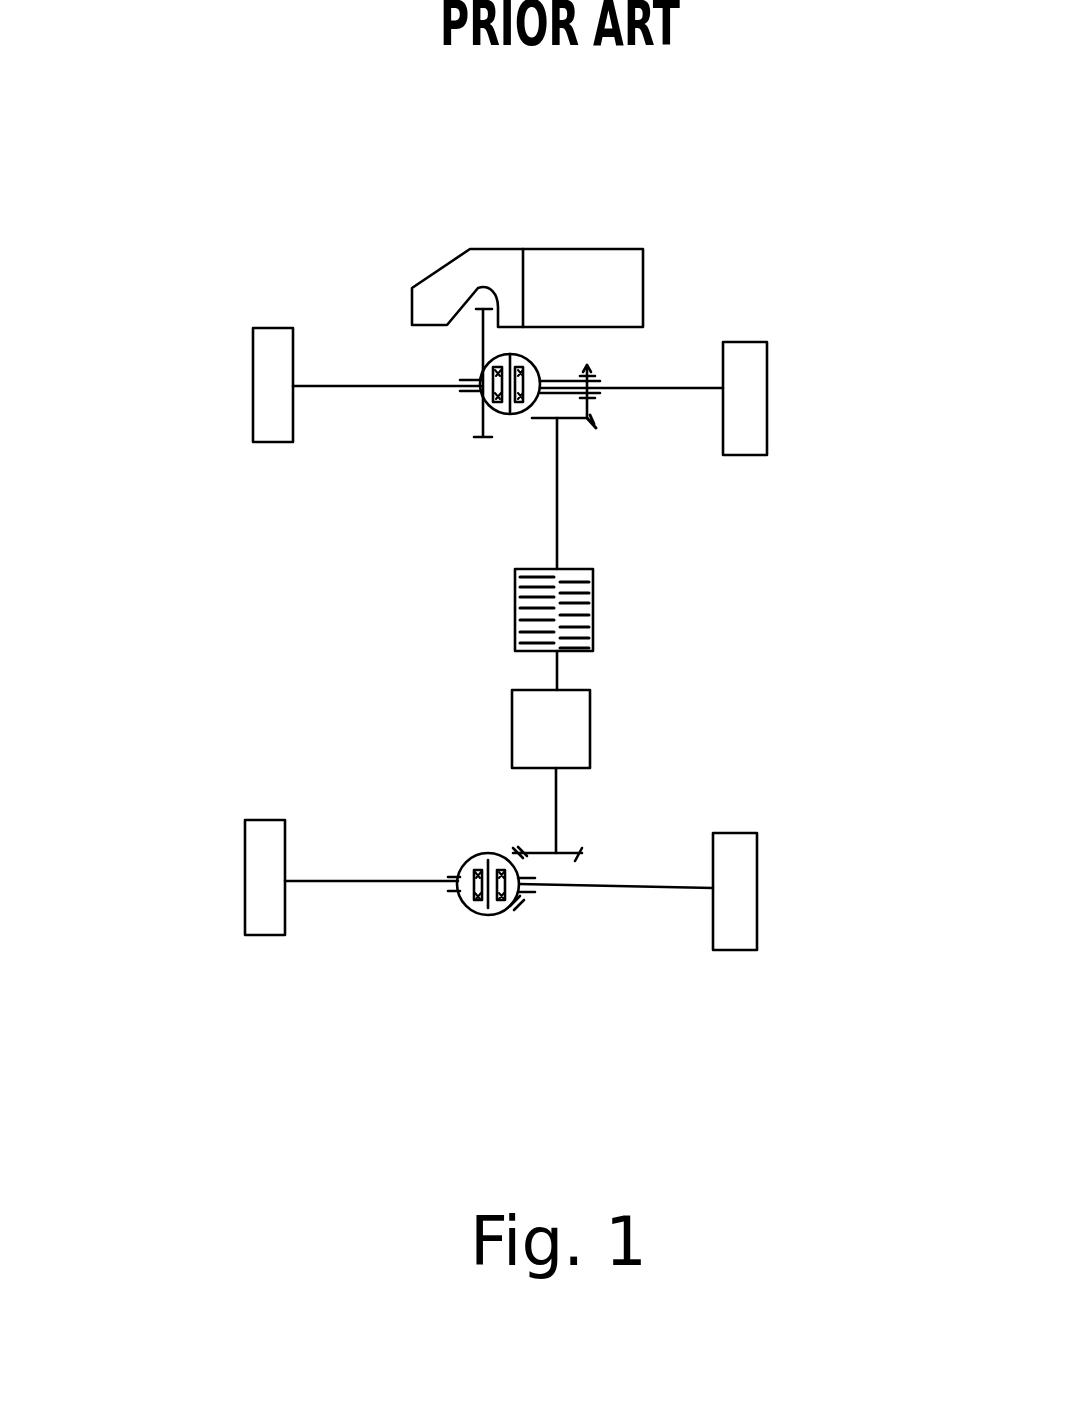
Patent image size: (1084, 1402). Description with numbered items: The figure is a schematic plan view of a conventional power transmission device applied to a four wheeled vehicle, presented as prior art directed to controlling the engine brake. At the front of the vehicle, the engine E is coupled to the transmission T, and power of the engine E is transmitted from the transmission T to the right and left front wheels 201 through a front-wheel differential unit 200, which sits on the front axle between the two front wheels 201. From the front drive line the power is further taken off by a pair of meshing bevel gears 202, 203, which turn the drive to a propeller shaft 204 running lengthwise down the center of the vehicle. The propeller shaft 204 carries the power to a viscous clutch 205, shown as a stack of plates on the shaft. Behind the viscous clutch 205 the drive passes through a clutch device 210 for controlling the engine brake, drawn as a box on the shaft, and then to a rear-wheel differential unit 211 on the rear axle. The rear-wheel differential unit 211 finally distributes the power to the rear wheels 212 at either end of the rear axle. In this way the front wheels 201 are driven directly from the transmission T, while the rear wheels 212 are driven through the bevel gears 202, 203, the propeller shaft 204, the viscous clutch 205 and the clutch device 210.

The transmission T is at (443, 290).
The engine E is at (583, 288).
The front-wheel differential unit 200 is at (517, 414).
The front wheels 201 is at (270, 442).
The bevel gear 202 is at (587, 368).
The bevel gear 203 is at (572, 421).
The propeller shaft 204 is at (557, 500).
The viscous clutch 205 is at (515, 605).
The clutch device 210 is at (590, 740).
The rear-wheel differential unit 211 is at (458, 915).
The rear wheels 212 is at (257, 820).